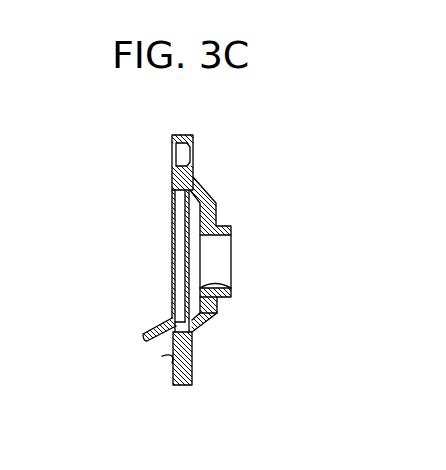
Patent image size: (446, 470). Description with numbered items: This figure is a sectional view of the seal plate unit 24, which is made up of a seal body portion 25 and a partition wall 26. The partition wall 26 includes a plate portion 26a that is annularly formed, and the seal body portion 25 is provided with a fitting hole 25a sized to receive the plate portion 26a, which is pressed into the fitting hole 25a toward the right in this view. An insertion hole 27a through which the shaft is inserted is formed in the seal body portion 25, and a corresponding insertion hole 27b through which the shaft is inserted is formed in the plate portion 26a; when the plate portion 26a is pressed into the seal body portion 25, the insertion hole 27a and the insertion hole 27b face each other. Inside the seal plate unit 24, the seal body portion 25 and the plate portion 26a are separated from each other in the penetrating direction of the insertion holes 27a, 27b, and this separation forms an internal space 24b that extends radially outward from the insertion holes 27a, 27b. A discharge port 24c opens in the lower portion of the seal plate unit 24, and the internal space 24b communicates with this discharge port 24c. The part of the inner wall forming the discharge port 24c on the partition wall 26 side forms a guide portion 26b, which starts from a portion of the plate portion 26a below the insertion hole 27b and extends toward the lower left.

The seal plate unit 24 is at (177, 265).
The internal space 24b is at (218, 206).
The discharge port 24c is at (190, 369).
The seal body portion 25 is at (242, 207).
The fitting hole 25a is at (201, 180).
The partition wall 26 is at (117, 279).
The plate portion 26a is at (129, 281).
The guide portion 26b is at (142, 338).
The insertion hole 27a is at (231, 291).
The insertion hole 27b is at (204, 269).